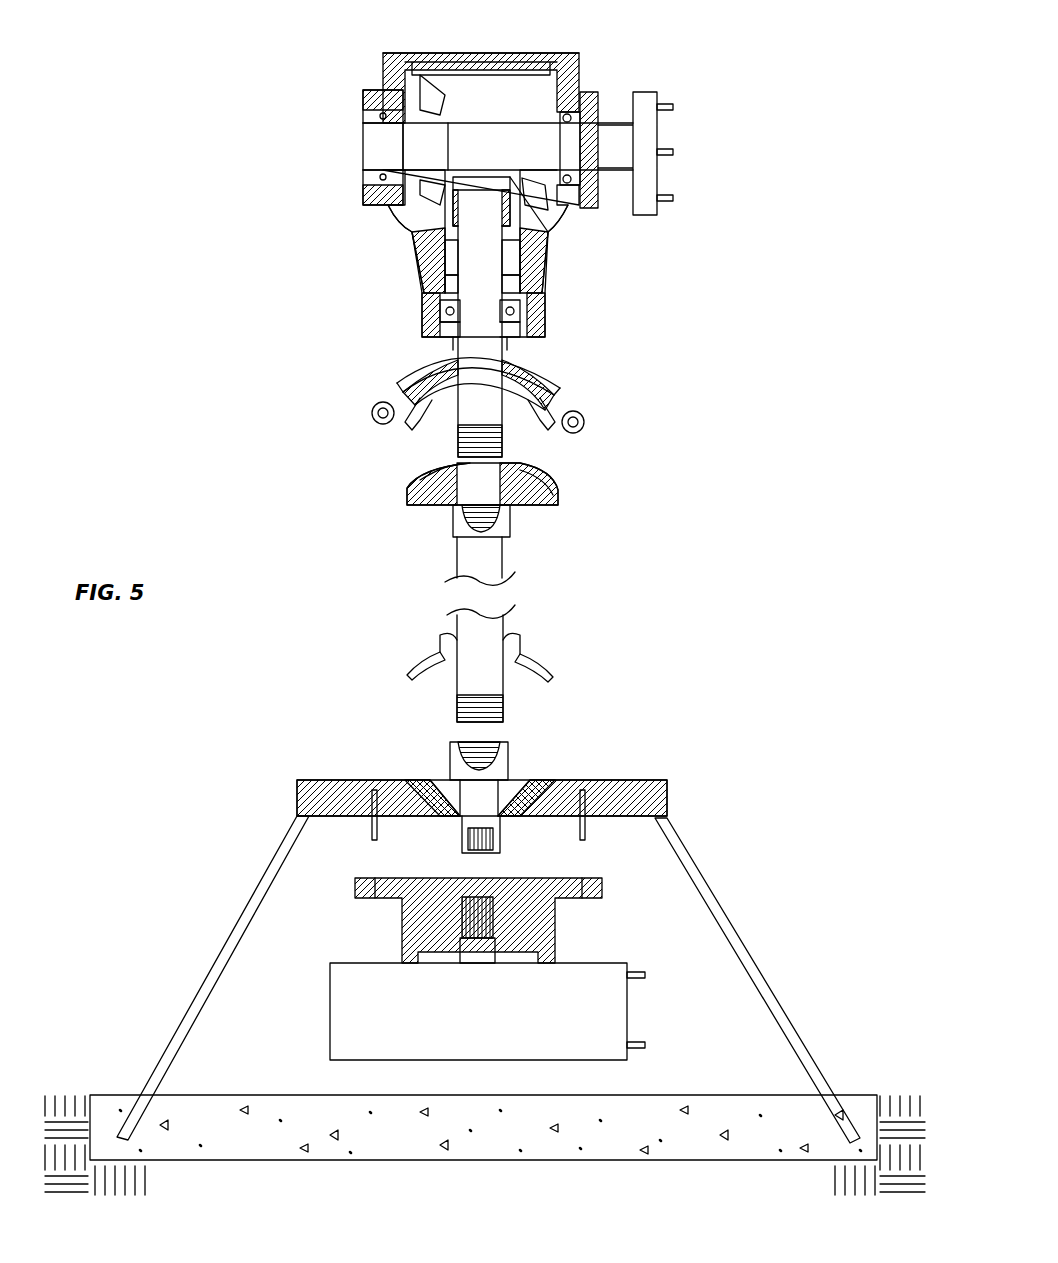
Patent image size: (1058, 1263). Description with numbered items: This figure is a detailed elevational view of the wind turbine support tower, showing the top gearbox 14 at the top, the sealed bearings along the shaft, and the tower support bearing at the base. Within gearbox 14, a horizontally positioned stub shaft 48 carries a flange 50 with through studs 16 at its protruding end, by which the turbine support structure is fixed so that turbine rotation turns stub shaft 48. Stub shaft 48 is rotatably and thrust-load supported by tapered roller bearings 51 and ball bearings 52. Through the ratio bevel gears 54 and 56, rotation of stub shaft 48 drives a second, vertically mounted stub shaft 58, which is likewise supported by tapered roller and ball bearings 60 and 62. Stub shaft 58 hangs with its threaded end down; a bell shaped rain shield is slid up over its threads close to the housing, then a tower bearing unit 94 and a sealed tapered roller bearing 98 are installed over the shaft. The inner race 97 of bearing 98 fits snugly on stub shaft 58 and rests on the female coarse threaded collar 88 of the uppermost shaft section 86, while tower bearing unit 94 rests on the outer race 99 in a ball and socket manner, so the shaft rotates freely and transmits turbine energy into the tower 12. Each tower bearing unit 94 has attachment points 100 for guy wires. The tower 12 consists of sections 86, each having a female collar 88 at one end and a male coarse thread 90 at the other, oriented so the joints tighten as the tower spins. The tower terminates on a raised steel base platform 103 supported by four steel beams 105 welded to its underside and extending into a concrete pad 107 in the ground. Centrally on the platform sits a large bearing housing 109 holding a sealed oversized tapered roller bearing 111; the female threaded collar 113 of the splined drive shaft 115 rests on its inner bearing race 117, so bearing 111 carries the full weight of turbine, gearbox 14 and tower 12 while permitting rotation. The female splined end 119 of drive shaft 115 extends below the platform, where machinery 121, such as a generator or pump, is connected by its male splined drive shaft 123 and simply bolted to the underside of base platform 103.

The tower 12 is at (528, 533).
The gearbox 14 is at (380, 236).
The through studs 16 is at (675, 107).
The stub shaft 48 is at (500, 128).
The flange 50 is at (648, 216).
The tapered roller bearings 51 is at (372, 95).
The ball bearings 52 is at (583, 94).
The bevel gear 54 is at (425, 56).
The bevel gear 56 is at (545, 230).
The stub shaft 58 is at (430, 283).
The tapered roller bearing 60 is at (432, 262).
The ball bearing 62 is at (425, 322).
The shaft section 86 is at (455, 560).
The female coarse threaded collar 88 is at (455, 522).
The male coarse thread 90 is at (505, 710).
The tower bearing unit 94 is at (420, 430).
The inner race 97 is at (522, 508).
The sealed tapered roller bearing 98 is at (565, 476).
The outer race 99 is at (410, 485).
The attachment points 100 is at (371, 413).
The base platform 103 is at (501, 791).
The steel beams 105 is at (248, 888).
The concrete pad 107 is at (700, 1096).
The bearing housing 109 is at (405, 780).
The sealed oversized tapered roller bearing 111 is at (505, 742).
The female threaded collar 113 is at (450, 752).
The splined drive shaft 115 is at (480, 812).
The inner bearing race 117 is at (522, 816).
The female splined end 119 is at (487, 852).
The machinery 121 is at (340, 1022).
The male splined drive shaft 123 is at (497, 920).